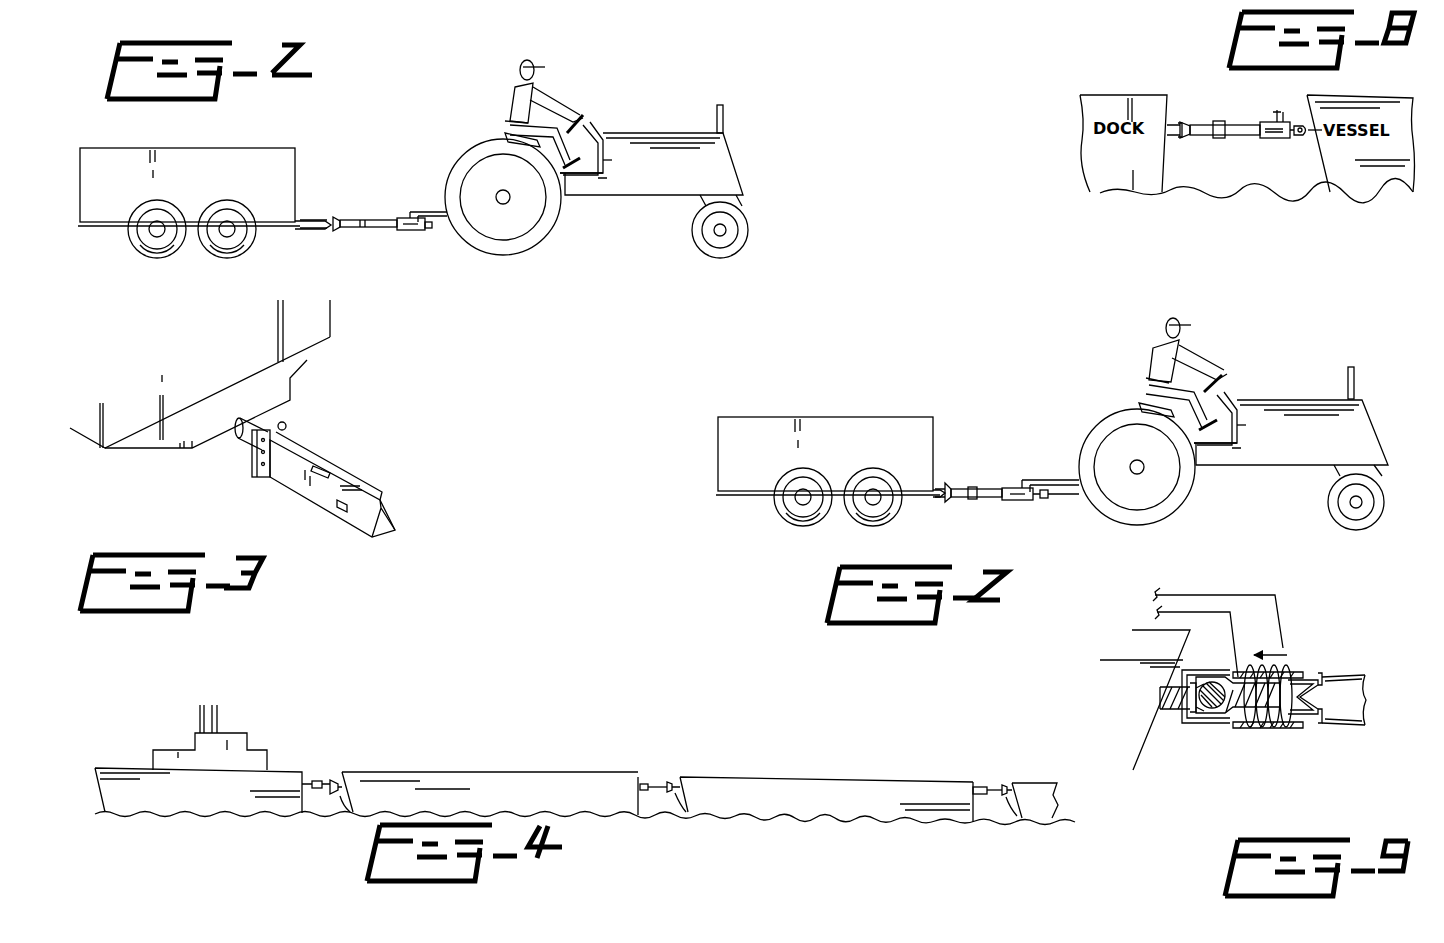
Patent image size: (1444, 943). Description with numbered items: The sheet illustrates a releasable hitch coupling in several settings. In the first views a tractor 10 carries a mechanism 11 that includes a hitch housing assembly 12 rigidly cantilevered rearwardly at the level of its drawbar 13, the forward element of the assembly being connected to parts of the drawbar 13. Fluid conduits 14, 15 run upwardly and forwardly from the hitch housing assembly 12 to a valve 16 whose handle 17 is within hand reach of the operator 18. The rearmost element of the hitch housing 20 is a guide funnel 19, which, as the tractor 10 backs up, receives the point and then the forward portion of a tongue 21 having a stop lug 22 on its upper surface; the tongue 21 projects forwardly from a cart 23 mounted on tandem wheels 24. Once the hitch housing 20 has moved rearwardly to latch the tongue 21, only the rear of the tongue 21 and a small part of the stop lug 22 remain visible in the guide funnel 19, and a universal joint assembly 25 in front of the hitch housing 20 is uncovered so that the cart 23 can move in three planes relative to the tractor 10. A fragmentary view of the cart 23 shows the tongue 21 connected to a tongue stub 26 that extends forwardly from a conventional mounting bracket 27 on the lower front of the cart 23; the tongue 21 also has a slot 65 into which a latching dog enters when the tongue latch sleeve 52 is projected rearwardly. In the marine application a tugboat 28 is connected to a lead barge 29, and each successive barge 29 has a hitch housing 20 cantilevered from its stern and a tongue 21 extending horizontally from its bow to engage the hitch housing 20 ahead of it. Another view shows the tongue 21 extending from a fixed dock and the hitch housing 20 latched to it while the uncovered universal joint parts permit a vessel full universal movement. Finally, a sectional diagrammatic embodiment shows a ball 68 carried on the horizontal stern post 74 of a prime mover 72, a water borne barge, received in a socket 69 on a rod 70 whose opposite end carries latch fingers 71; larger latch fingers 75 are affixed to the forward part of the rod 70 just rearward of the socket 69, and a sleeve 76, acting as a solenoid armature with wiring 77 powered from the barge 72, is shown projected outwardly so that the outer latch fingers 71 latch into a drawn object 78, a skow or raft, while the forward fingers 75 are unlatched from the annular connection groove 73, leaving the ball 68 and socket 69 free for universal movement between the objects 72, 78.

In FIG. 1, the tractor 10 is at (632, 103).
In FIG. 2, the tractor 10 is at (1233, 424).
In FIG. 1, the mechanism 11 is at (337, 190).
In FIG. 2, the mechanism 11 is at (978, 465).
In FIG. 1, the hitch housing assembly 12 is at (378, 210).
In FIG. 2, the hitch housing assembly 12 is at (1007, 473).
In FIG. 1, the drawbar 13 is at (431, 230).
In FIG. 2, the drawbar 13 is at (1060, 500).
In FIG. 1, the fluid conduit 14 is at (413, 212).
In FIG. 2, the fluid conduit 14 is at (1045, 478).
In FIG. 8, the fluid conduit 14 is at (1272, 118).
In FIG. 1, the fluid conduit 15 is at (440, 216).
In FIG. 2, the fluid conduit 15 is at (1068, 484).
In FIG. 8, the fluid conduit 15 is at (1285, 118).
In FIG. 1, the valve 16 is at (598, 122).
In FIG. 2, the valve 16 is at (1235, 393).
In FIG. 1, the handle 17 is at (583, 110).
In FIG. 2, the handle 17 is at (1226, 359).
In FIG. 1, the operator 18 is at (510, 95).
In FIG. 2, the operator 18 is at (1162, 374).
In FIG. 1, the guide funnel 19 is at (335, 232).
In FIG. 2, the guide funnel 19 is at (943, 500).
In FIG. 8, the guide funnel 19 is at (1200, 138).
In FIG. 4, the guide funnel 19 is at (332, 795).
In FIG. 1, the hitch housing 20 is at (360, 229).
In FIG. 2, the hitch housing 20 is at (975, 499).
In FIG. 8, the hitch housing 20 is at (1265, 143).
In FIG. 4, the hitch housing 20 is at (318, 780).
In FIG. 1, the tongue 21 is at (305, 230).
In FIG. 2, the tongue 21 is at (938, 497).
In FIG. 3, the tongue 21 is at (353, 530).
In FIG. 8, the tongue 21 is at (1177, 137).
In FIG. 4, the tongue 21 is at (340, 808).
In FIG. 1, the stop lug 22 is at (304, 218).
In FIG. 2, the stop lug 22 is at (952, 482).
In FIG. 3, the stop lug 22 is at (330, 468).
In FIG. 8, the stop lug 22 is at (1190, 120).
In FIG. 4, the stop lug 22 is at (332, 782).
In FIG. 1, the cart 23 is at (184, 148).
In FIG. 2, the cart 23 is at (843, 417).
In FIG. 3, the cart 23 is at (222, 366).
In FIG. 1, the tandem wheels 24 is at (180, 265).
In FIG. 2, the tandem wheels 24 is at (828, 528).
In FIG. 2, the universal joint assembly 25 is at (1042, 506).
In FIG. 8, the universal joint assembly 25 is at (1302, 143).
In FIG. 3, the tongue stub 26 is at (240, 438).
In FIG. 3, the mounting bracket 27 is at (178, 450).
In FIG. 4, the tugboat 28 is at (213, 793).
In FIG. 4, the barge 29 is at (470, 775).
In FIG. 8, the tongue latch sleeve 52 is at (1222, 121).
In FIG. 3, the slot 65 is at (335, 508).
In FIG. 9, the ball 68 is at (1204, 712).
In FIG. 9, the socket 69 is at (1214, 708).
In FIG. 9, the rod 70 is at (1252, 728).
In FIG. 9, the latch fingers 71 is at (1316, 724).
In FIG. 9, the prime mover 72 is at (1143, 710).
In FIG. 9, the annular connection groove 73 is at (1180, 712).
In FIG. 9, the stern post 74 is at (1165, 696).
In FIG. 9, the latch fingers 75 is at (1205, 676).
In FIG. 9, the sleeve 76 is at (1244, 672).
In FIG. 9, the wiring 77 is at (1270, 728).
In FIG. 9, the drawn object 78 is at (1357, 677).